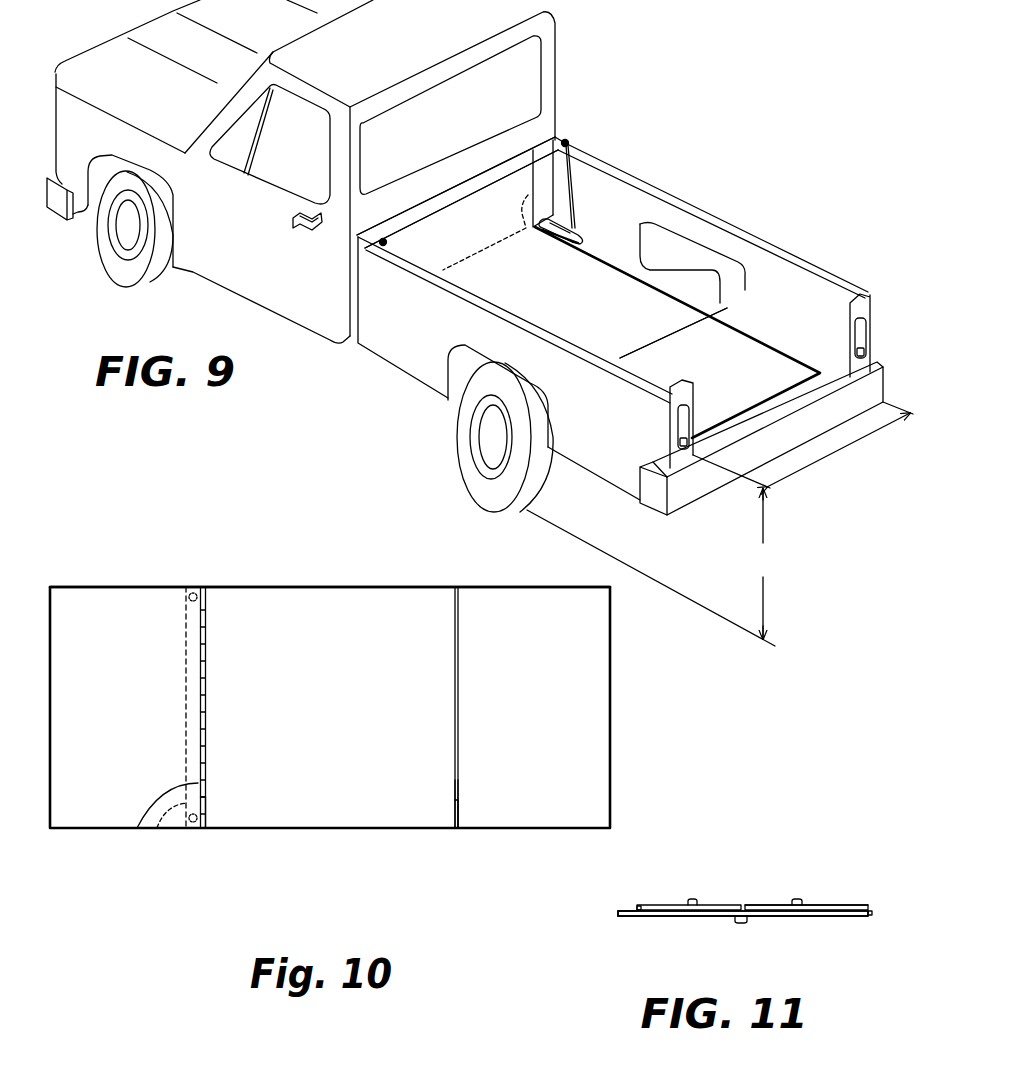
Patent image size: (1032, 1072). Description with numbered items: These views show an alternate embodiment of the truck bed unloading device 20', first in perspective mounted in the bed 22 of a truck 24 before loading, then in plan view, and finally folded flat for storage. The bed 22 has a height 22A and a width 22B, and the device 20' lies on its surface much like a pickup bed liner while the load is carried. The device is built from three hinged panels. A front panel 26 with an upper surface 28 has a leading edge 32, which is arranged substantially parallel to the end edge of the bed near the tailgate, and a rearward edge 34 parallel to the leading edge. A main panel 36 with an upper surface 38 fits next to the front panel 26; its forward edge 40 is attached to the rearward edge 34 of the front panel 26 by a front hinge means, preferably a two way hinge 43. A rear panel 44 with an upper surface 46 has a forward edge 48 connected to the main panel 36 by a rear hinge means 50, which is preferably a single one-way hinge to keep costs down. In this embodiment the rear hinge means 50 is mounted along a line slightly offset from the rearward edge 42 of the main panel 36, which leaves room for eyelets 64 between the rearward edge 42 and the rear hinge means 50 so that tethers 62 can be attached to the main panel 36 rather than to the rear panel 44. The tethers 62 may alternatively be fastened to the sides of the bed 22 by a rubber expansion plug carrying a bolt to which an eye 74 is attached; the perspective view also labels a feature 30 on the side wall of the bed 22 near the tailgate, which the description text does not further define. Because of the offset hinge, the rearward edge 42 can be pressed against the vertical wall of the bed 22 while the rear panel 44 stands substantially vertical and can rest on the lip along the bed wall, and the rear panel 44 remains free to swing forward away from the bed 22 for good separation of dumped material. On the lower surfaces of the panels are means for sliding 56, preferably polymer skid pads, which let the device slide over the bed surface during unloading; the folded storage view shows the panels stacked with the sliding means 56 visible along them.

In FIG. 9, the truck bed unloading device 20' is at (677, 257).
In FIG. 10, the truck bed unloading device 20' is at (330, 527).
In FIG. 11, the truck bed unloading device 20' is at (743, 836).
In FIG. 9, the bed 22 is at (793, 347).
In FIG. 9, the height 22A is at (762, 563).
In FIG. 9, the width 22B is at (803, 445).
In FIG. 9, the truck 24 is at (327, 417).
In FIG. 9, the front panel 26 is at (753, 350).
In FIG. 10, the front panel 26 is at (518, 613).
In FIG. 11, the front panel 26 is at (857, 903).
In FIG. 9, the upper surface 28 is at (742, 390).
In FIG. 10, the upper surface 28 is at (512, 684).
In FIG. 11, the upper surface 28 is at (763, 903).
In FIG. 9, the stake post 30 is at (850, 370).
In FIG. 10, the leading edge 32 is at (605, 699).
In FIG. 10, the rearward edge 34 is at (462, 782).
In FIG. 9, the main panel 36 is at (668, 305).
In FIG. 10, the main panel 36 is at (412, 623).
In FIG. 11, the main panel 36 is at (667, 913).
In FIG. 9, the upper surface 38 is at (584, 316).
In FIG. 10, the upper surface 38 is at (307, 710).
In FIG. 11, the upper surface 38 is at (710, 913).
In FIG. 10, the forward edge 40 is at (447, 783).
In FIG. 10, the rearward edge 42 is at (163, 830).
In FIG. 11, the rearward edge 42 is at (617, 916).
In FIG. 10, the two way hinge 43 is at (458, 823).
In FIG. 11, the two way hinge 43 is at (880, 913).
In FIG. 9, the rear panel 44 is at (518, 177).
In FIG. 10, the rear panel 44 is at (158, 603).
In FIG. 11, the rear panel 44 is at (647, 903).
In FIG. 9, the upper surface 46 is at (471, 225).
In FIG. 10, the upper surface 46 is at (104, 710).
In FIG. 11, the upper surface 46 is at (720, 903).
In FIG. 10, the forward edge 48 is at (137, 833).
In FIG. 10, the rear hinge means 50 is at (203, 830).
In FIG. 11, the rear hinge means 50 is at (617, 913).
In FIG. 11, the means for sliding 56 is at (697, 897).
In FIG. 9, the tethers 62 is at (572, 190).
In FIG. 9, the eyelets 64 is at (530, 200).
In FIG. 10, the eyelets 64 is at (195, 588).
In FIG. 9, the eye 74 is at (567, 138).